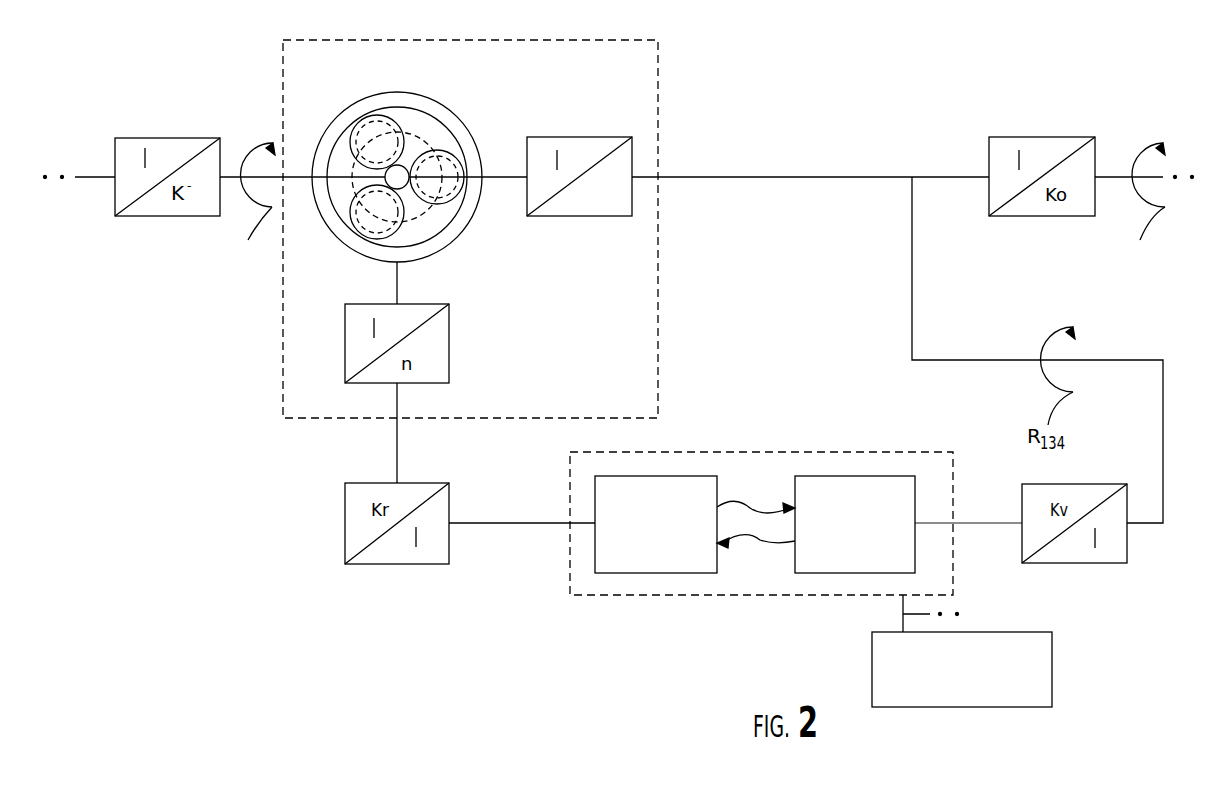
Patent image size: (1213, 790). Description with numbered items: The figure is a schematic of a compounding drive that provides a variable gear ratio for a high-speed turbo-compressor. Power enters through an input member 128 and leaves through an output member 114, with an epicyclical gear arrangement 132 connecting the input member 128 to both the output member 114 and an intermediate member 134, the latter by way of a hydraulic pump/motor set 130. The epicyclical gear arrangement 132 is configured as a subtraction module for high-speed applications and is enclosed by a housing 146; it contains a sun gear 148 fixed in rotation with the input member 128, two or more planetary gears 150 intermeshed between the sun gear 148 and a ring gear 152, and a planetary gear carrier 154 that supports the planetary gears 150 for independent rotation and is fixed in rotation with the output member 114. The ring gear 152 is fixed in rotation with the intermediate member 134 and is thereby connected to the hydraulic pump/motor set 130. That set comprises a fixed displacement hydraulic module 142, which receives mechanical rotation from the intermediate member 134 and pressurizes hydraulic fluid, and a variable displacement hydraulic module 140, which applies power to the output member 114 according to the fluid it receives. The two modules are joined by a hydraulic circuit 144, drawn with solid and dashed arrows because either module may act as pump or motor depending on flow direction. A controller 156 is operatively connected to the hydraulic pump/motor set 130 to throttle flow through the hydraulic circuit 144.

The output member 114 is at (1112, 177).
The input member 128 is at (245, 177).
The hydraulic pump/motor set 130 is at (780, 452).
The epicyclical gear arrangement 132 is at (484, 145).
The intermediate member 134 is at (397, 461).
The variable displacement hydraulic module 140 is at (870, 476).
The fixed displacement hydraulic module 142 is at (693, 476).
The hydraulic circuit 144 is at (742, 505).
The housing 146 is at (445, 40).
The sun gear 148 is at (387, 187).
The planetary gears 150 is at (347, 142).
The ring gear 152 is at (462, 222).
The planetary gear carrier 154 is at (413, 135).
The controller 156 is at (1052, 663).